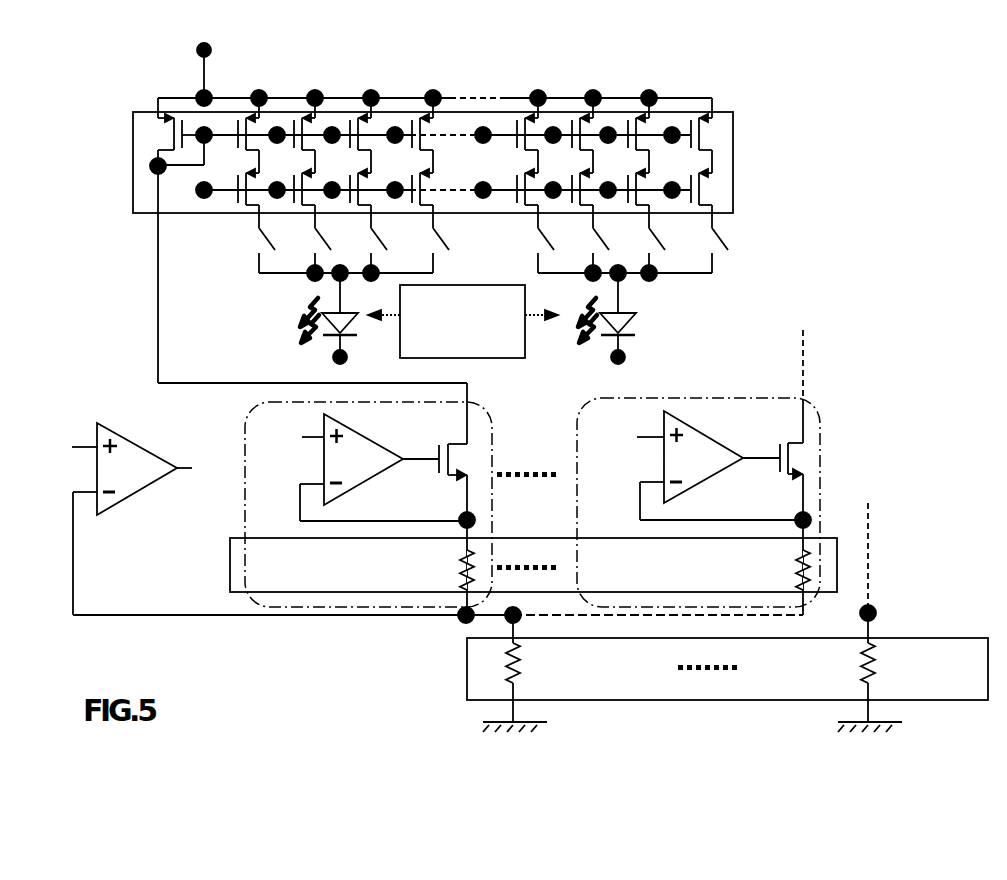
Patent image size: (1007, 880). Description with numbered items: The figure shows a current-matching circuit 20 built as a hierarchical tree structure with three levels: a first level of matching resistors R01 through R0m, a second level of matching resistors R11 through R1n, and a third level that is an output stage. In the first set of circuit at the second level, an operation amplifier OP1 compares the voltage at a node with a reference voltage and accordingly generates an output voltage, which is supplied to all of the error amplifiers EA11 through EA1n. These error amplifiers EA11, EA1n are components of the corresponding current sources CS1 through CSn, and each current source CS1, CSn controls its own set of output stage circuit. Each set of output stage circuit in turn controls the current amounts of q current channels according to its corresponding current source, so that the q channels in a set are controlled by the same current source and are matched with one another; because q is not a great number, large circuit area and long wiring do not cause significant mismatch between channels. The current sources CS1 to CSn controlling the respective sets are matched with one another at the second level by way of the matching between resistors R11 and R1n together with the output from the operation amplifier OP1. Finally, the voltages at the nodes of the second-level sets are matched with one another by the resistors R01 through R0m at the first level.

The LED driver circuit (three-level current source structure) 20 is at (877, 292).
The operation amplifier OP1 is at (153, 480).
The current source CS1 is at (270, 404).
The current source CSn is at (670, 396).
The error amplifier EA11 is at (388, 470).
The error amplifier EA1n is at (723, 468).
The resistor R11 is at (437, 570).
The resistor R1n is at (774, 570).
The resistor R01 is at (550, 668).
The resistor R0m is at (909, 667).